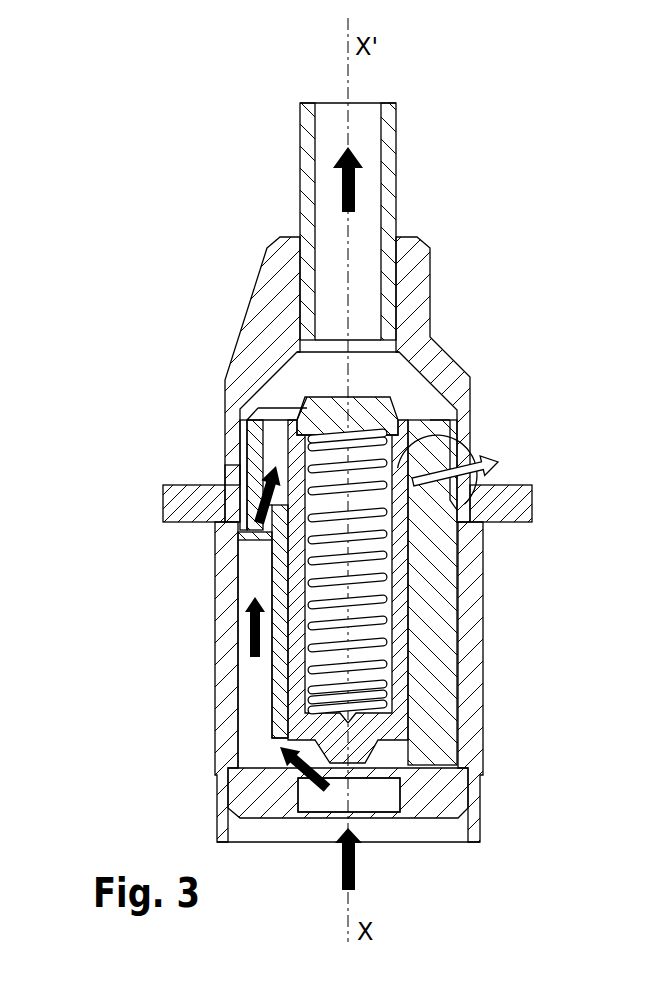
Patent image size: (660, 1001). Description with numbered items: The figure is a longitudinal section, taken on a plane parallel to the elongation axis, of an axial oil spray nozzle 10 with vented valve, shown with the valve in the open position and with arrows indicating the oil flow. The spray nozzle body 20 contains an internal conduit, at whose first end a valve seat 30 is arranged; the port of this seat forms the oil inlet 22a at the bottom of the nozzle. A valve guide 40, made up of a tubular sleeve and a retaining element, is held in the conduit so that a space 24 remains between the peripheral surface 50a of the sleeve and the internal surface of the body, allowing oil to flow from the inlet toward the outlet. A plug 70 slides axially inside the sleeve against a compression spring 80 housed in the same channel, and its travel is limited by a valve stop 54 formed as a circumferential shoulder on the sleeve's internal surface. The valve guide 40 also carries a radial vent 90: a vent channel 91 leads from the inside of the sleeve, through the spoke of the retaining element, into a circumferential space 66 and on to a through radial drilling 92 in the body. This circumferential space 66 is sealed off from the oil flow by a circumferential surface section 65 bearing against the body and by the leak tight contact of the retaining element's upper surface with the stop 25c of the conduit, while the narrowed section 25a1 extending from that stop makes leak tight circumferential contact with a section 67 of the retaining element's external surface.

The oil spray nozzle 10 is at (148, 253).
The spray nozzle body 20 is at (255, 364).
The oil inlet 22a is at (358, 824).
The space 24 is at (253, 723).
The narrowed section 25a1 is at (237, 423).
The stop 25c is at (257, 415).
The valve seat 30 is at (262, 800).
The valve guide 40 is at (283, 600).
The peripheral surface 50a is at (283, 688).
The valve stop 54 is at (428, 515).
The circumferential surface section 65 is at (236, 533).
The circumferential space 66 is at (228, 473).
The section 67 is at (243, 447).
The plug 70 is at (400, 617).
The compression spring 80 is at (387, 687).
The radial vent 90 is at (405, 420).
The vent channel 91 is at (440, 464).
The through radial drilling 92 is at (500, 463).